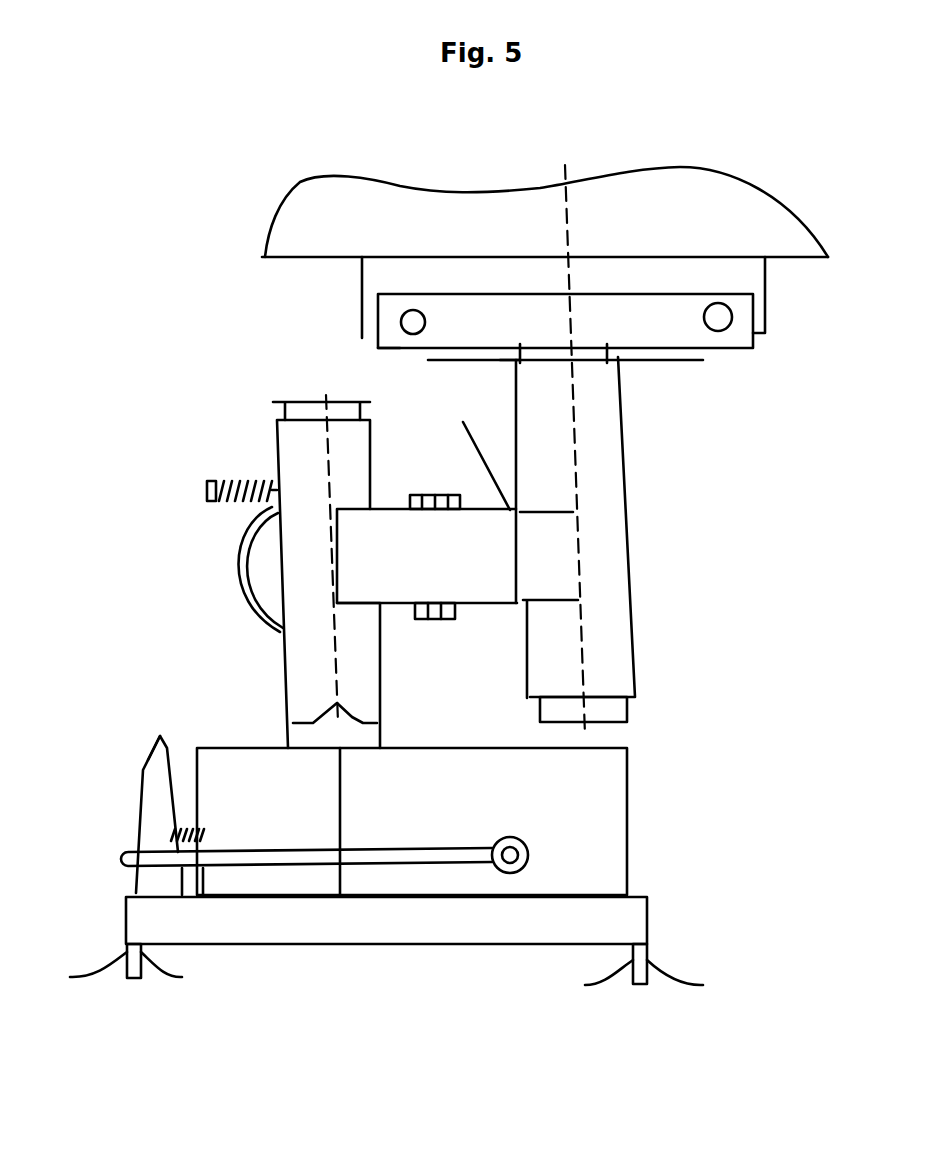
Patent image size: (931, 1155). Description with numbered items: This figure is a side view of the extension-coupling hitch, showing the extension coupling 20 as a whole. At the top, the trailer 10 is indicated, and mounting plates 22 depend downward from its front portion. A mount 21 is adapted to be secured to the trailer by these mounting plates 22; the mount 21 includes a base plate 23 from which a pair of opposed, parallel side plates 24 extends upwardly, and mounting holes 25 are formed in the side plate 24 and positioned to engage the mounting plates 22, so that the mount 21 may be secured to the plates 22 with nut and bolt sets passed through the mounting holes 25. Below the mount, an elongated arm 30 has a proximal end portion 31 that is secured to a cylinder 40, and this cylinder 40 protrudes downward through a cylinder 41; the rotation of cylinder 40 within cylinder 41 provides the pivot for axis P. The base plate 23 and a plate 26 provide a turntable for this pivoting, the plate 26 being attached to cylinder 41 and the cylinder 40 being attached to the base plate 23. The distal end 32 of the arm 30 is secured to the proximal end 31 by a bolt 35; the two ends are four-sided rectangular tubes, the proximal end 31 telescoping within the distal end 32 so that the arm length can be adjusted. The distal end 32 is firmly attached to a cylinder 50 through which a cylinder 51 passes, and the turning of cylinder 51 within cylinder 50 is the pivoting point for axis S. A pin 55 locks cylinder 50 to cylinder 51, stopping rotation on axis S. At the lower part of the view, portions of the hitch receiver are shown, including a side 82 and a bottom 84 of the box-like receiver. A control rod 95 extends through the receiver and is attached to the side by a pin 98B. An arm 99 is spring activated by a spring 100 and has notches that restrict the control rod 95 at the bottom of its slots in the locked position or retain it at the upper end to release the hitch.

The trailer 10 is at (338, 237).
The mounting plates 22 is at (373, 275).
The side plates 24 is at (383, 313).
The mounting holes 25 is at (722, 324).
The mount 21 is at (356, 358).
The base plate 23 is at (398, 350).
The plate 26 is at (505, 365).
The cylinder 41 is at (551, 373).
The cylinder 40 is at (547, 712).
The elongated arm 30 is at (453, 500).
The proximal end portion 31 is at (508, 508).
The distal end 32 is at (412, 480).
The bolt 35 is at (440, 620).
The cylinder 50 is at (327, 642).
The cylinder 51 is at (285, 410).
The pin 55 is at (257, 482).
The extension coupling 20 is at (224, 652).
The side 82 is at (282, 772).
The control rod 95 is at (262, 860).
The pin 98B is at (528, 852).
The arm 99 is at (147, 810).
The spring 100 is at (147, 765).
The bottom 84 is at (130, 903).